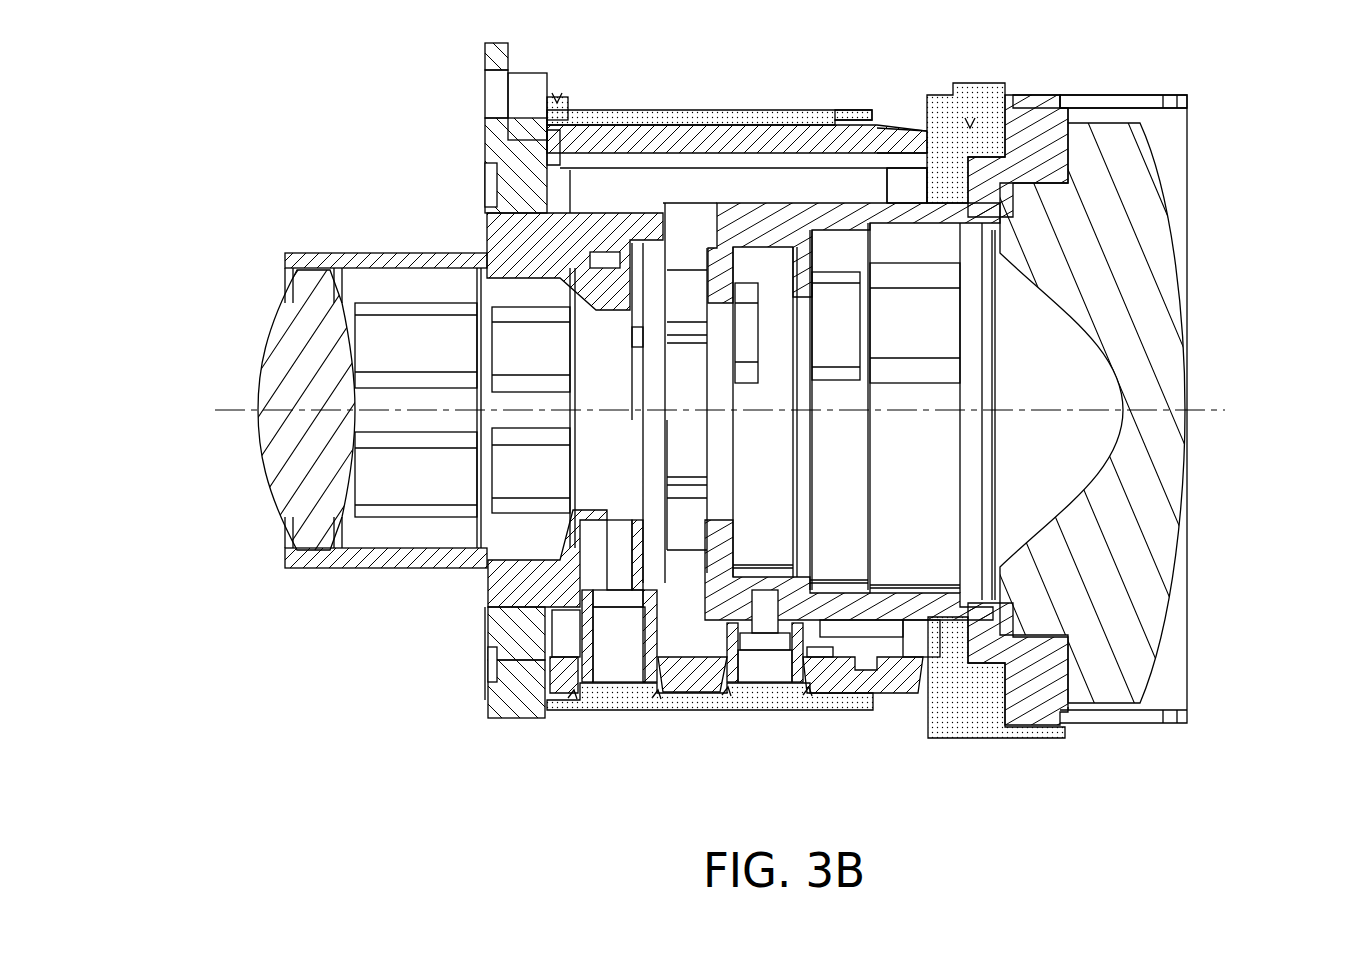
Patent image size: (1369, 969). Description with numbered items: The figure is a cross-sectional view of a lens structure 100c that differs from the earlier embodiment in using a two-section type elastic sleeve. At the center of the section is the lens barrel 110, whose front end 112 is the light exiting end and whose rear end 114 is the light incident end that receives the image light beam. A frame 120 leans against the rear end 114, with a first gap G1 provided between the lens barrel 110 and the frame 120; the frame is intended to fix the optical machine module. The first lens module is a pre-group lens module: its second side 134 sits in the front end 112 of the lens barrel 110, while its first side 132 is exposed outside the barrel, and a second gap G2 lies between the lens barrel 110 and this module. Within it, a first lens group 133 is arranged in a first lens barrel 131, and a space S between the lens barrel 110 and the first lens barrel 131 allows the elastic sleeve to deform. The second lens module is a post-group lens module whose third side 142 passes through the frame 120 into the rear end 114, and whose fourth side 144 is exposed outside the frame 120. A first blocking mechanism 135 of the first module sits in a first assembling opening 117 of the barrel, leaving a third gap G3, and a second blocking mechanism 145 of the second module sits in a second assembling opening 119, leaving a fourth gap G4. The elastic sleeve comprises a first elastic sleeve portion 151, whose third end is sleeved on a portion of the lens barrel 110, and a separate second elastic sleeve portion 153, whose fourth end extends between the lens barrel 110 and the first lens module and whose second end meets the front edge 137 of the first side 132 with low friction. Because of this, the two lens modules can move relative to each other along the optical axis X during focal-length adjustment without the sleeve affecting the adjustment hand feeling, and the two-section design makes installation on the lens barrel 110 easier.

The lens structure 100c is at (1273, 759).
The lens barrel 110 is at (760, 140).
The front end 112 is at (936, 679).
The rear end 114 is at (532, 700).
The first assembling opening 117 is at (800, 695).
The second assembling opening 119 is at (647, 700).
The frame 120 is at (510, 722).
The first lens barrel 131 is at (1022, 160).
The first side 132 is at (1196, 227).
The first lens group 133 is at (1073, 362).
The second side 134 is at (700, 293).
The first blocking mechanism 135 is at (767, 668).
The third side 142 is at (677, 695).
The fourth side 144 is at (258, 325).
The second blocking mechanism 145 is at (618, 658).
The first elastic sleeve portion 151 is at (812, 115).
The second elastic sleeve portion 153 is at (968, 82).
The front edge 137 is at (1130, 99).
The first gap G1 is at (552, 128).
The second gap G2 is at (902, 190).
The third gap G3 is at (676, 592).
The fourth gap G4 is at (577, 697).
The space S is at (972, 112).
The optical axis X is at (735, 410).